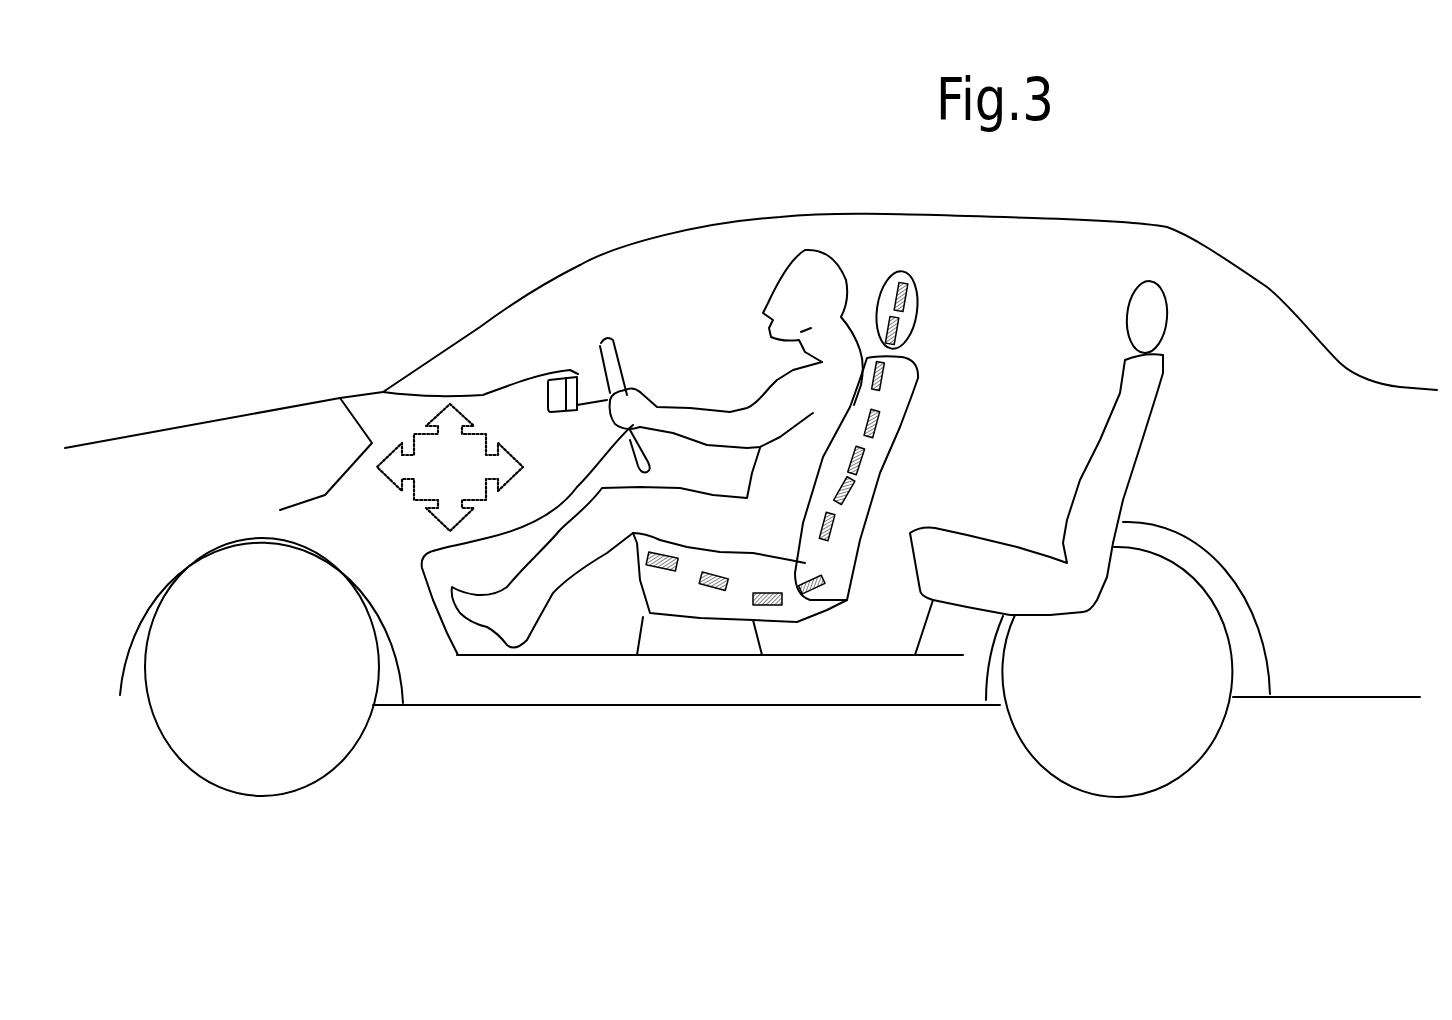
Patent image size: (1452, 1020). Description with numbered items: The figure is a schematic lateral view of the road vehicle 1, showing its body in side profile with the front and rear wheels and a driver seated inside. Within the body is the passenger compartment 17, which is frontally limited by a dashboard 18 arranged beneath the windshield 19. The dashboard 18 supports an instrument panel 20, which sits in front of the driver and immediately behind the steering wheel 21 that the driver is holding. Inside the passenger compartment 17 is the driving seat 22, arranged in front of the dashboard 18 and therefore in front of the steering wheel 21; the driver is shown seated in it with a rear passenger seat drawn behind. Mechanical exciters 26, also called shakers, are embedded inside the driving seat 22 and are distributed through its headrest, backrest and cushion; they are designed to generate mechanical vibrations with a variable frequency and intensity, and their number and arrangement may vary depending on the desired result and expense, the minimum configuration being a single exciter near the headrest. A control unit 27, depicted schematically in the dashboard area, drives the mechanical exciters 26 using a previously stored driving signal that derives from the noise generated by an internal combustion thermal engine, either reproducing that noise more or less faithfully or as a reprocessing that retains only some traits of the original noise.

The road vehicle 1 is at (296, 142).
The passenger compartment 17 is at (781, 160).
The dashboard 18 is at (537, 443).
The windshield 19 is at (478, 327).
The instrument panel 20 is at (557, 390).
The steering wheel 21 is at (618, 353).
The driving seat 22 is at (806, 640).
The mechanical exciters 26 is at (873, 427).
The control unit 27 is at (450, 467).